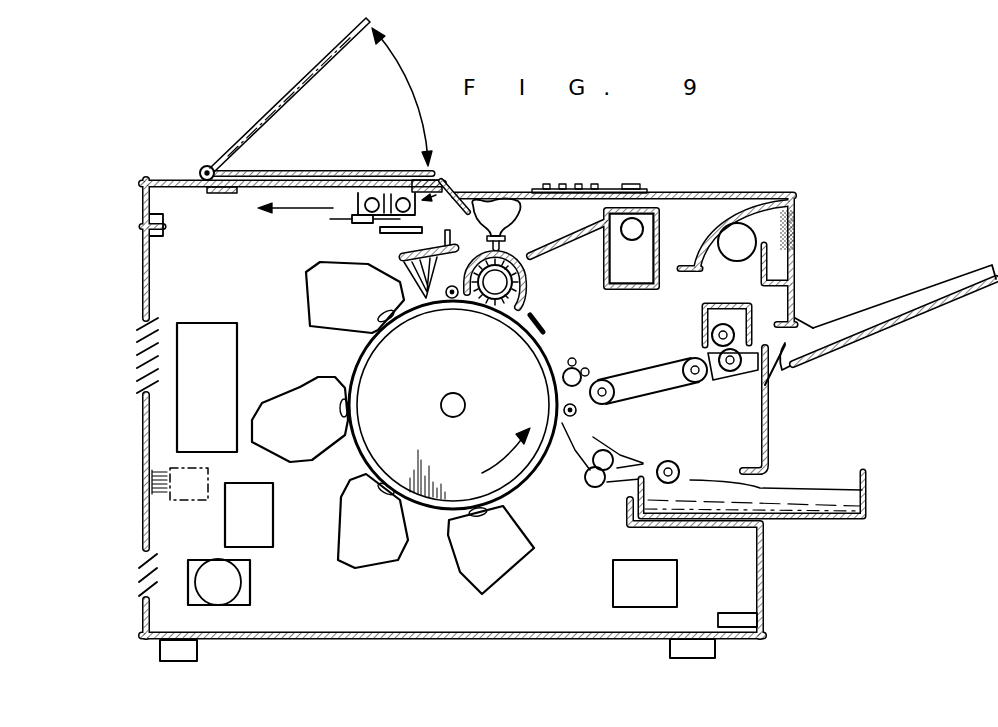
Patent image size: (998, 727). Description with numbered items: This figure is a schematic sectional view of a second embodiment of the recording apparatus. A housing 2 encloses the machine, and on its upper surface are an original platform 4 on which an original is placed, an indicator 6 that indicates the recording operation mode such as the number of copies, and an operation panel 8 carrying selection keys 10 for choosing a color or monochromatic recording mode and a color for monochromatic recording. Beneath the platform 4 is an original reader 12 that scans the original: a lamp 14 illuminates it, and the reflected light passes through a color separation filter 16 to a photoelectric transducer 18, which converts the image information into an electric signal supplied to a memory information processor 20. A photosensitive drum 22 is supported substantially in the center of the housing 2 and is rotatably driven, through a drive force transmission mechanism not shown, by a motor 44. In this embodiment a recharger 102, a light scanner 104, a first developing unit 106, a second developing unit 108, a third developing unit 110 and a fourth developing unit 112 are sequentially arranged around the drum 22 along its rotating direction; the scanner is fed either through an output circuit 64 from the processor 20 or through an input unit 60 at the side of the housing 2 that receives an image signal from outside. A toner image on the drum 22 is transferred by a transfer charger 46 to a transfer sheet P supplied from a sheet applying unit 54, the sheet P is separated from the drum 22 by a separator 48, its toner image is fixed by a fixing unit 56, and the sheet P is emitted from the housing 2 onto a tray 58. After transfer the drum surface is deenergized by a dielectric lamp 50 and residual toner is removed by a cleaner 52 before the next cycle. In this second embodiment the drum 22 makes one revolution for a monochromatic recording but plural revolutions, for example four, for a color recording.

The housing 2 is at (766, 193).
The original platform 4 is at (324, 178).
The indicator 6 is at (503, 214).
The operation panel 8 is at (612, 192).
The selection keys 10 is at (581, 189).
The original reader 12 is at (446, 186).
The lamp 14 is at (403, 198).
The color separation filter 16 is at (352, 223).
The photoelectric transducer 18 is at (422, 230).
The memory information processor 20 is at (193, 323).
The photosensitive drum 22 is at (554, 368).
The motor 44 is at (250, 590).
The transfer charger 46 is at (577, 411).
The separator 48 is at (580, 366).
The dielectric lamp 50 is at (543, 323).
The cleaner 52 is at (534, 286).
The sheet applying unit 54 is at (822, 518).
The fixing unit 56 is at (703, 302).
The tray 58 is at (888, 332).
The input unit 60 is at (150, 482).
The output circuit 64 is at (273, 510).
The recharger 102 is at (449, 288).
The light scanner 104 is at (402, 258).
The first developing unit 106 is at (306, 279).
The second developing unit 108 is at (260, 418).
The third developing unit 110 is at (358, 568).
The fourth developing unit 112 is at (460, 572).
The transfer sheet P is at (809, 486).